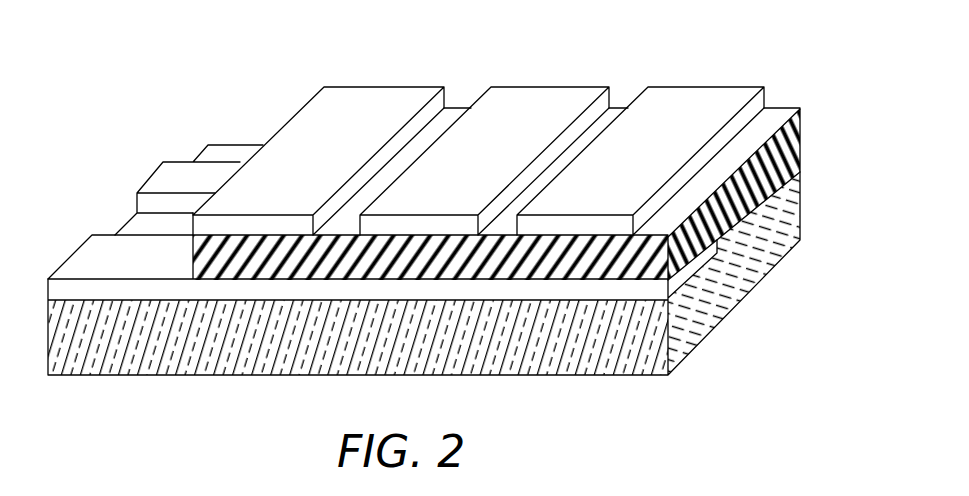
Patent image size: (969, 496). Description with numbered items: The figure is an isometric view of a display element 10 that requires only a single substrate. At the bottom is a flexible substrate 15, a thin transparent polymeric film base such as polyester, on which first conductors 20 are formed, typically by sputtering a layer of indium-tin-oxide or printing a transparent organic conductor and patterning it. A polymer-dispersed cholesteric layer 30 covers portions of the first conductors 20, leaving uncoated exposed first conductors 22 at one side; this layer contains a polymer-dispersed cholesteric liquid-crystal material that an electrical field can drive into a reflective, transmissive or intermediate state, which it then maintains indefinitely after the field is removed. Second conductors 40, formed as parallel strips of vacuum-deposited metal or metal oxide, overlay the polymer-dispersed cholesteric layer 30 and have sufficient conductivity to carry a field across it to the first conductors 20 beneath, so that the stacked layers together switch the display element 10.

The display element 10 is at (222, 69).
The flexible substrate 15 is at (697, 347).
The first conductors 20 is at (762, 205).
The exposed first conductors 22 is at (185, 178).
The polymer-dispersed cholesteric layer 30 is at (800, 133).
The second conductors 40 is at (677, 98).